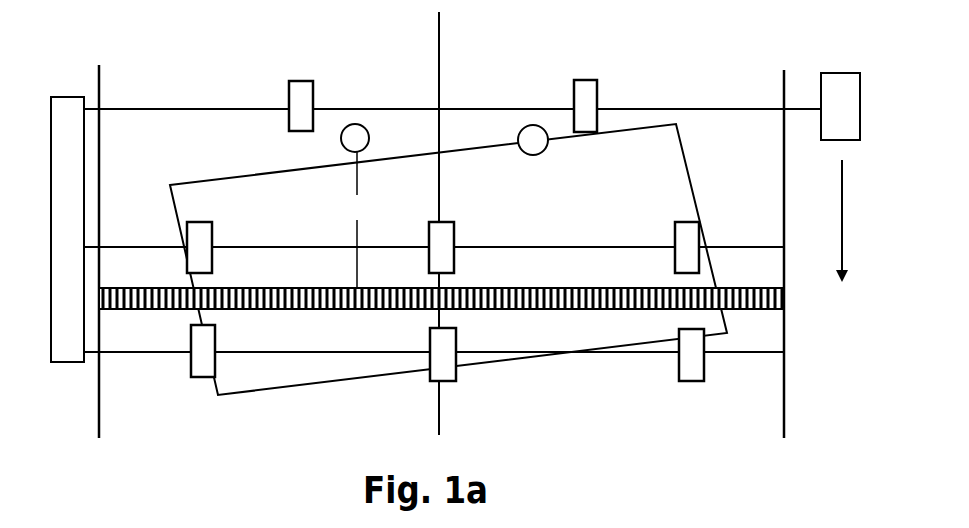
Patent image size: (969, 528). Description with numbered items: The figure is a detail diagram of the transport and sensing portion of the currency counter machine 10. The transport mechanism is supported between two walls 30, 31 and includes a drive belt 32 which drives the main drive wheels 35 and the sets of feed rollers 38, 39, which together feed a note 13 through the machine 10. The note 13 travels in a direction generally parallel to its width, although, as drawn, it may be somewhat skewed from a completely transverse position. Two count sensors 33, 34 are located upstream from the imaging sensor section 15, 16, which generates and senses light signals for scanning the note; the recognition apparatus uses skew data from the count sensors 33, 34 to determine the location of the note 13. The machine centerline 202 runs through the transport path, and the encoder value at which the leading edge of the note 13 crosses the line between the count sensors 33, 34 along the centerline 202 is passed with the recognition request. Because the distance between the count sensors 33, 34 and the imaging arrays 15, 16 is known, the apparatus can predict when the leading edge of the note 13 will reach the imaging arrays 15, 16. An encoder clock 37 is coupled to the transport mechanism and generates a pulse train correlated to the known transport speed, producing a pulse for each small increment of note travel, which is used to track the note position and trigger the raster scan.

The currency counter machine 10 is at (597, 78).
The note 13 is at (278, 172).
The imaging sensor section 15 is at (441, 258).
The imaging sensor section 16 is at (155, 289).
The wall 30 is at (100, 80).
The wall 31 is at (781, 85).
The drive belt 32 is at (60, 97).
The count sensor 33 is at (368, 130).
The count sensor 34 is at (518, 138).
The main drive wheels 35 is at (469, 77).
The encoder clock 37 is at (840, 72).
The feed rollers 38 is at (675, 233).
The feed rollers 39 is at (679, 362).
The machine centerline 202 is at (437, 50).